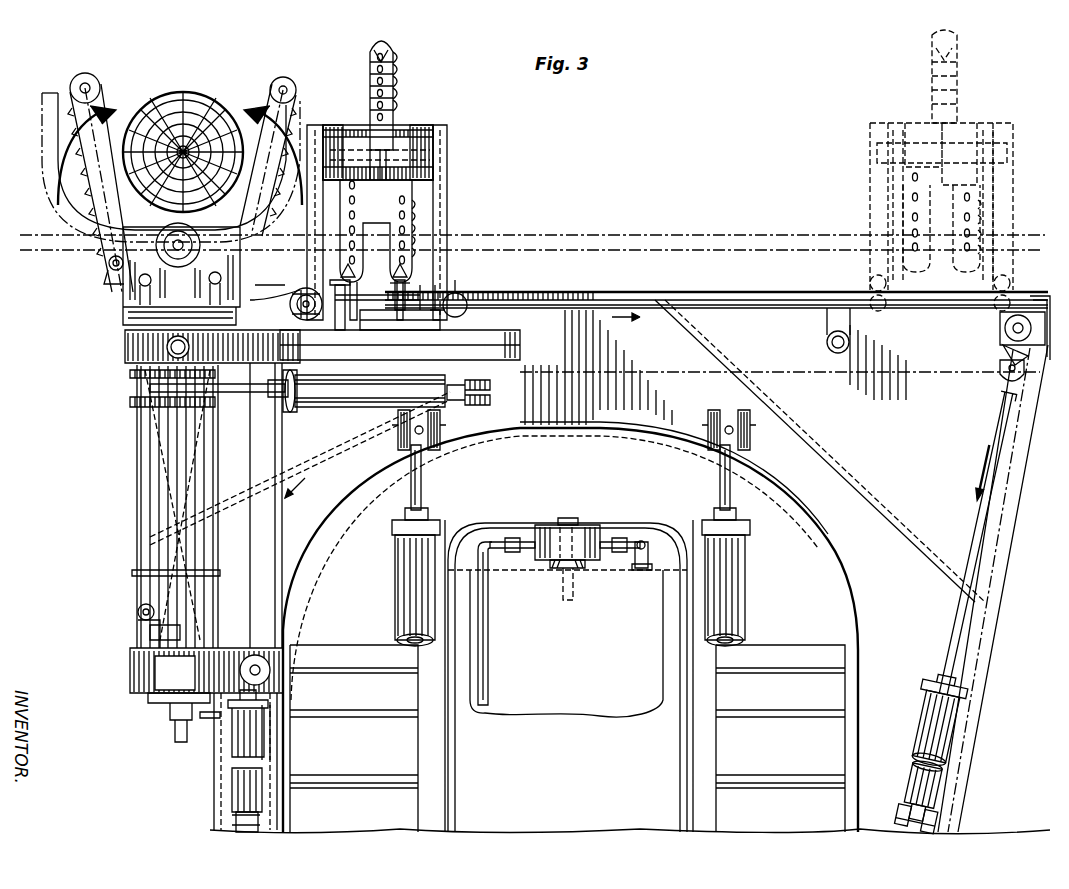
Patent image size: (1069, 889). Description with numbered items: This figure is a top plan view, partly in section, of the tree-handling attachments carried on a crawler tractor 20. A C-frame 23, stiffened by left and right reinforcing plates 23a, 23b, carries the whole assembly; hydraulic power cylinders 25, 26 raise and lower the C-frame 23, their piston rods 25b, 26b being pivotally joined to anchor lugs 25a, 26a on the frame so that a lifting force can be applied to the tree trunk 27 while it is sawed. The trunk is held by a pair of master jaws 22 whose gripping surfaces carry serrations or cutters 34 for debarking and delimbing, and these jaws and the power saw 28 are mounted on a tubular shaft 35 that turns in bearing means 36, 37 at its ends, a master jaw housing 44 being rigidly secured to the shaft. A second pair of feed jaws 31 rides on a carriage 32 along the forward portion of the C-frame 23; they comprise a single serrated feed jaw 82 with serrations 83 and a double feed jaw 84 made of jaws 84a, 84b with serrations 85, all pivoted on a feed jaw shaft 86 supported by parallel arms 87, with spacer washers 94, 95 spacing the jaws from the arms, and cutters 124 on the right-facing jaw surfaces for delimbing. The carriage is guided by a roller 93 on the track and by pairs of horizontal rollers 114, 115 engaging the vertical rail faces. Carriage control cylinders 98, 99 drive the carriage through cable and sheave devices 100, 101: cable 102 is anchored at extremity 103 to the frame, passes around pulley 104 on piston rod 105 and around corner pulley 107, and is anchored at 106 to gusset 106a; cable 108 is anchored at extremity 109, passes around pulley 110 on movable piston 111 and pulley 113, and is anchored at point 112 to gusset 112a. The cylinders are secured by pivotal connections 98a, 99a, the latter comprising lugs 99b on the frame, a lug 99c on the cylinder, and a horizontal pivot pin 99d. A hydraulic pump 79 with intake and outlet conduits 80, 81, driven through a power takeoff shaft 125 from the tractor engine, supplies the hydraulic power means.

The crawler tractor 20 is at (626, 712).
The master jaws 22 is at (80, 223).
The C-frame 23 is at (650, 290).
The left reinforcing plate 23a is at (295, 470).
The right reinforcing plate 23b is at (800, 432).
The hydraulic power cylinder 25 is at (395, 580).
The anchor lug 25a is at (400, 445).
The piston rod 25b is at (422, 482).
The hydraulic power cylinder 26 is at (745, 562).
The anchor lug 26a is at (740, 448).
The piston rod 26b is at (720, 490).
The tree trunk 27 is at (181, 92).
The power saw 28 is at (70, 86).
The feed jaws 31 is at (440, 86).
The carriage 32 is at (868, 178).
The serrations or cutters 34 is at (90, 128).
The tubular shaft 35 is at (137, 478).
The bearing means 36 is at (125, 340).
The bearing means 37 is at (130, 665).
The master jaw housing 44 is at (108, 262).
The hydraulic pump 79 is at (588, 525).
The intake conduit 80 is at (635, 560).
The outlet conduit 81 is at (490, 597).
The single feed jaw 82 is at (395, 52).
The serrations 83 is at (372, 62).
The double feed jaw 84 is at (370, 262).
The feed jaw 84a is at (410, 262).
The feed jaw 84b is at (350, 262).
The serrations 85 is at (410, 252).
The feed jaw shaft 86 is at (440, 140).
The arms 87 is at (312, 125).
The roller 93 is at (455, 318).
The spacer washer 94 is at (333, 125).
The spacer washer 95 is at (418, 125).
The carriage control cylinder 98 is at (232, 748).
The pivotal connection 98a is at (236, 822).
The carriage control cylinder 99 is at (948, 745).
The pivotal connection 99a is at (938, 815).
The lugs 99b is at (945, 822).
The lug 99c is at (910, 800).
The horizontal pivot pin 99d is at (912, 818).
The cable and sheave device 100 is at (309, 487).
The cable and sheave device 101 is at (1000, 330).
The cable 102 is at (284, 555).
The cable extremity 103 is at (245, 405).
The pulley 104 is at (285, 690).
The piston rod 105 is at (270, 746).
The cable anchor 106 is at (374, 263).
The lug or gusset 106a is at (345, 300).
The corner pulley 107 is at (400, 324).
The cable 108 is at (738, 310).
The cable extremity 109 is at (1010, 355).
The pulley 110 is at (1000, 378).
The movable piston 111 is at (996, 430).
The cable anchor point 112 is at (415, 318).
The lug or gusset 112a is at (395, 318).
The pulley 113 is at (1032, 296).
The pair of horizontal rollers 114 is at (300, 282).
The pair of horizontal rollers 115 is at (442, 300).
The cutters 124 is at (400, 78).
The power takeoff shaft 125 is at (560, 600).